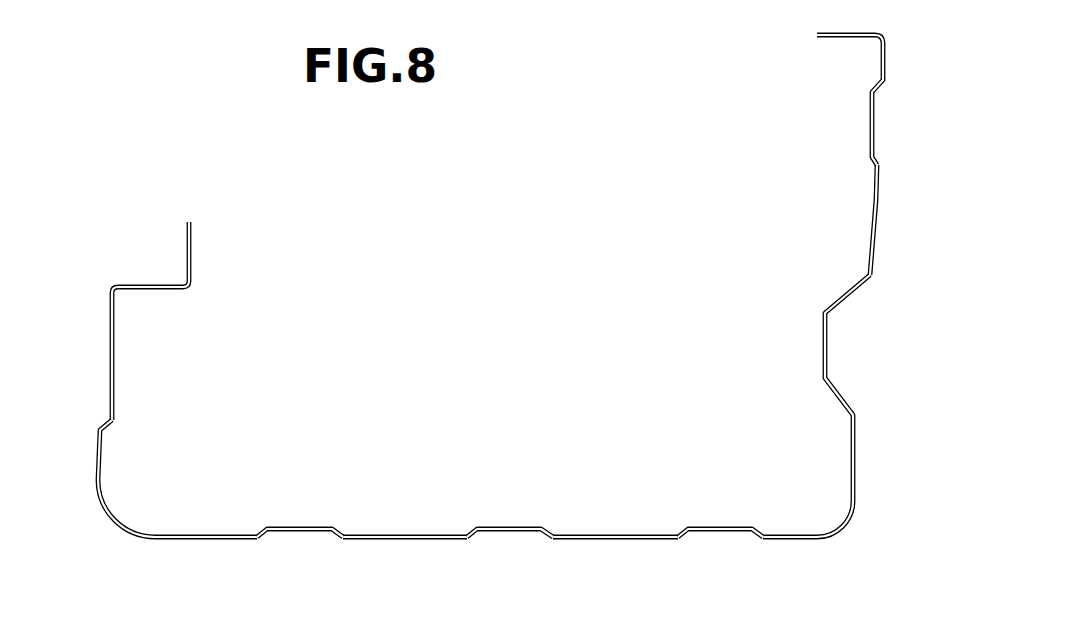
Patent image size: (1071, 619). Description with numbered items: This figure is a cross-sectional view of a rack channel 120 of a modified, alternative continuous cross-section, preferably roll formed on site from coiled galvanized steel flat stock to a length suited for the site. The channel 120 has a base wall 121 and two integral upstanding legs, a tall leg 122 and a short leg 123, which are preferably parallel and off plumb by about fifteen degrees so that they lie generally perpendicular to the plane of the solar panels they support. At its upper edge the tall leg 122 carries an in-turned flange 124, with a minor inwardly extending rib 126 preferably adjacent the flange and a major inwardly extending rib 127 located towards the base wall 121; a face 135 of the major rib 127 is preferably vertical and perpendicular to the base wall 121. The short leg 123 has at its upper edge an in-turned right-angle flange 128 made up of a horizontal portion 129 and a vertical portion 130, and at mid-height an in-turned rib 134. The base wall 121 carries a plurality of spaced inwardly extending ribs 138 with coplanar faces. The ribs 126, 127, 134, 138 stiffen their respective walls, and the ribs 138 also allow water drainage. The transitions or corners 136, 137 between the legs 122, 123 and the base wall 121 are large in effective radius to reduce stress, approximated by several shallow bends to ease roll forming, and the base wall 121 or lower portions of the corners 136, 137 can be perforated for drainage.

The rack channel 120 is at (117, 221).
The base wall 121 is at (404, 539).
The tall leg 122 is at (877, 208).
The short leg 123 is at (100, 441).
The in-turned flange 124 is at (848, 33).
The minor inwardly extending rib 126 is at (913, 126).
The major inwardly extending rib 127 is at (828, 353).
The in-turned right-angle flange 128 is at (205, 264).
The horizontal portion 129 is at (152, 292).
The vertical portion 130 is at (193, 237).
The in-turned rib 134 is at (108, 387).
The face of the major rib 135 is at (826, 342).
The corner 136 is at (833, 518).
The corner 137 is at (116, 512).
The inwardly extending ribs 138 is at (300, 531).